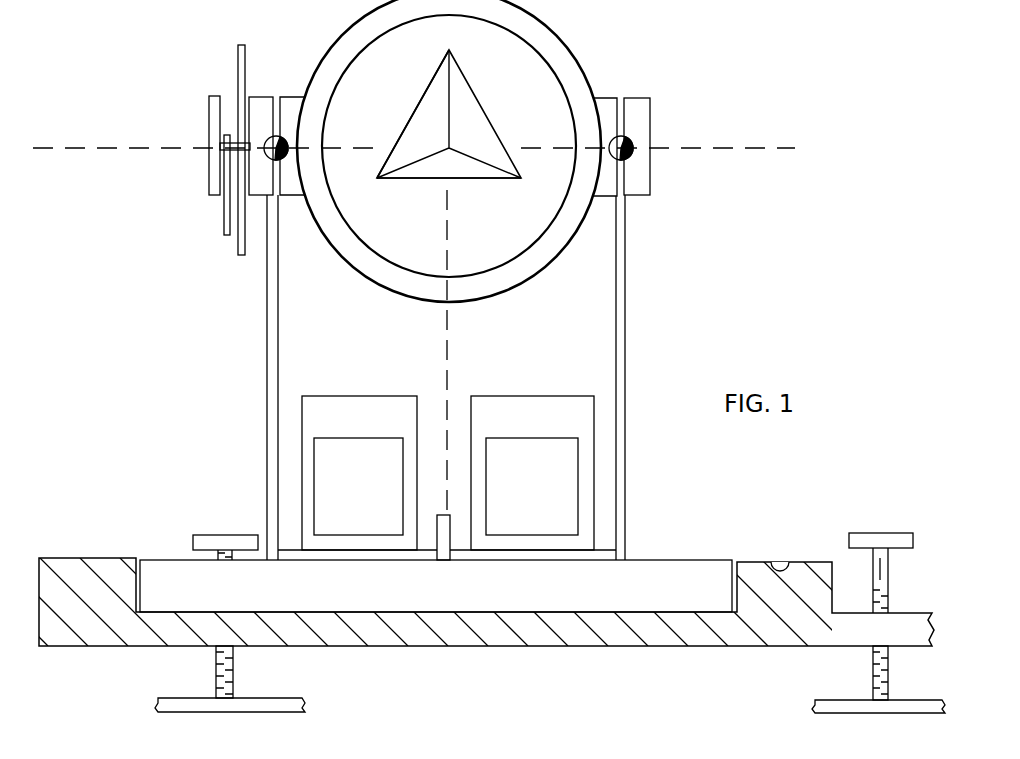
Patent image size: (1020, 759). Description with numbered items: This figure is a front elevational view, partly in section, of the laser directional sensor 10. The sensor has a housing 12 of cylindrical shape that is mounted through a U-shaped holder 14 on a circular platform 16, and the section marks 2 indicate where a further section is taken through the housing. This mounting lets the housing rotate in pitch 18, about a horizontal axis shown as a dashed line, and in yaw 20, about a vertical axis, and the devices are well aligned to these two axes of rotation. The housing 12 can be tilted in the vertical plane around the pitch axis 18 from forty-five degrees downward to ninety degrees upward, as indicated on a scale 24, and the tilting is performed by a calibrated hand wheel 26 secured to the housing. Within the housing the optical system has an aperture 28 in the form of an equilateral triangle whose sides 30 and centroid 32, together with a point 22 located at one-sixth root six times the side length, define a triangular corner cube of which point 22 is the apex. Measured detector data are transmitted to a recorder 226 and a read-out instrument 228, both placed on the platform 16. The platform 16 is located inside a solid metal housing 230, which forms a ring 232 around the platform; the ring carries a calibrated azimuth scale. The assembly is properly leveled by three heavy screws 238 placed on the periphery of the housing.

The section line 2- 2 is at (190, 287).
The laser directional sensor 10 is at (568, 40).
The housing 12 is at (574, 78).
The U-shaped holder 14 is at (624, 342).
The circular platform 16 is at (673, 575).
The pitch axis 18 is at (89, 136).
The yaw axis 20 is at (446, 340).
The apex point of corner cube 22 is at (450, 147).
The scale 24 is at (236, 244).
The calibrated hand wheel 26 is at (210, 192).
The aperture 28 is at (492, 104).
The aperture side 30 is at (412, 113).
The centroid 32 is at (461, 172).
The recorder 226 is at (327, 467).
The read-out instrument 228 is at (560, 472).
The solid metal housing 230 is at (712, 648).
The ring 232 is at (797, 562).
The heavy screws 238 is at (212, 533).